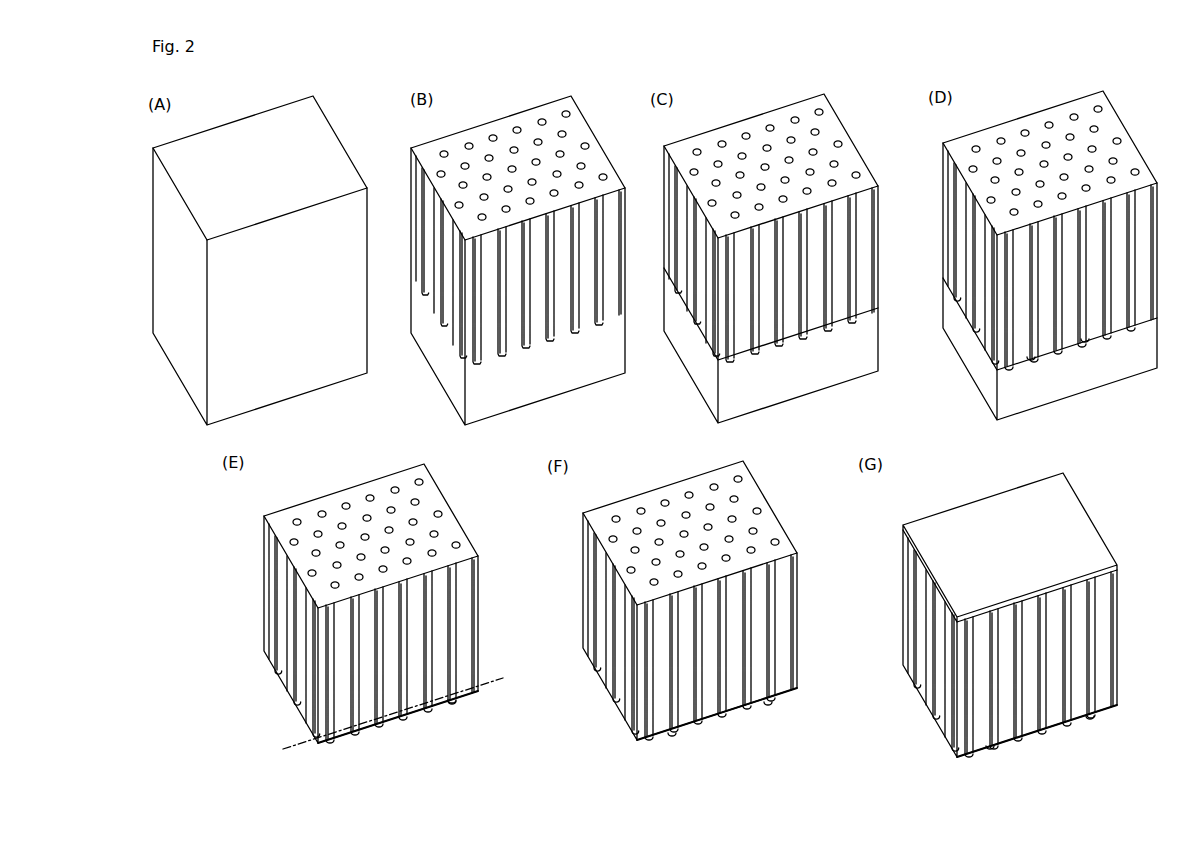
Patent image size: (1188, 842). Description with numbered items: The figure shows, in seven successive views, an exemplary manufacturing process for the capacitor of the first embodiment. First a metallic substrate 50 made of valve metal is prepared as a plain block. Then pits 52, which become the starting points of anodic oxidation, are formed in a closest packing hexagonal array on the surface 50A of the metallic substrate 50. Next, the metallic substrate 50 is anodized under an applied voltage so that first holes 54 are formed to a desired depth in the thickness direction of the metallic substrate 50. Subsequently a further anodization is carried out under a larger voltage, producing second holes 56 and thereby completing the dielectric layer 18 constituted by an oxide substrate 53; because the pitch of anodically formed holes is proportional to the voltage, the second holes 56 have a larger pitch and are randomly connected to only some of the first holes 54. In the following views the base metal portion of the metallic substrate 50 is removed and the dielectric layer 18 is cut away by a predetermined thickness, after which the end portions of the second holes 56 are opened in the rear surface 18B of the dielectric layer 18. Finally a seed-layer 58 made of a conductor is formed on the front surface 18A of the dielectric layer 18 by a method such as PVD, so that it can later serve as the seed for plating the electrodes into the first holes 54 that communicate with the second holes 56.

In FIG. 2C, the dielectric layer 18 is at (770, 264).
In FIG. 2D, the dielectric layer 18 is at (942, 195).
In FIG. 2E, the dielectric layer 18 is at (265, 530).
In FIG. 2F, the dielectric layer 18 is at (578, 553).
In FIG. 2G, the dielectric layer 18 is at (900, 565).
In FIG. 2C, the front surface of the dielectric layer 18A is at (670, 146).
In FIG. 2E, the front surface of the dielectric layer 18A is at (343, 490).
In FIG. 2F, the front surface of the dielectric layer 18A is at (683, 488).
In FIG. 2E, the rear surface of the dielectric layer 18B is at (393, 722).
In FIG. 2F, the rear surface of the dielectric layer 18B is at (697, 728).
In FIG. 2G, the rear surface of the dielectric layer 18B is at (1022, 742).
In FIG. 2A, the metallic substrate 50 is at (328, 112).
In FIG. 2B, the metallic substrate 50 is at (442, 373).
In FIG. 2C, the metallic substrate 50 is at (697, 374).
In FIG. 2D, the metallic substrate 50 is at (953, 338).
In FIG. 2A, the surface of the metallic substrate 50A is at (205, 142).
In FIG. 2B, the pits 52 is at (466, 130).
In FIG. 2C, the oxide substrate 53 is at (771, 284).
In FIG. 2C, the first holes 54 is at (721, 141).
In FIG. 2D, the first holes 54 is at (948, 240).
In FIG. 2E, the first holes 54 is at (273, 580).
In FIG. 2F, the first holes 54 is at (637, 512).
In FIG. 2G, the first holes 54 is at (903, 608).
In FIG. 2D, the second holes 56 is at (1031, 357).
In FIG. 2E, the second holes 56 is at (452, 700).
In FIG. 2F, the second holes 56 is at (768, 700).
In FIG. 2G, the second holes 56 is at (1090, 713).
In FIG. 2G, the seed-layer 58 is at (980, 508).